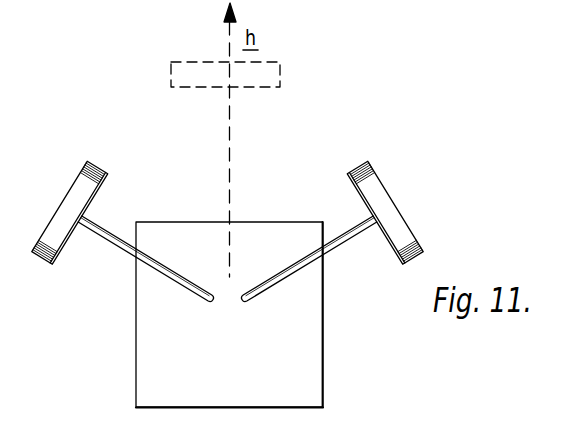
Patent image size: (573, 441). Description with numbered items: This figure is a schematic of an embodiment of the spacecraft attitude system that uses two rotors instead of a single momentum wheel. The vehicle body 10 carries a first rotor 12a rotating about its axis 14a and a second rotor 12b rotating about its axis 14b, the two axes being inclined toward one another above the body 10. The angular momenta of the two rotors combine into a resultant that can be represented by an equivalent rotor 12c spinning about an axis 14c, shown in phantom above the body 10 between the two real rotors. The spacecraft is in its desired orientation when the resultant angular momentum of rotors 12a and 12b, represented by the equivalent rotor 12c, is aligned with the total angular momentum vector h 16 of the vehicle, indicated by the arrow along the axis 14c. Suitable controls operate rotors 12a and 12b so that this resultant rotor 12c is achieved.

The body 10 is at (140, 332).
The first rotor 12a is at (383, 190).
The second rotor 12b is at (77, 190).
The equivalent rotor 12c is at (279, 74).
The axis 14a is at (342, 243).
The axis 14b is at (117, 240).
The axis 14c is at (231, 152).
The angular momentum vector h 16 is at (230, 33).